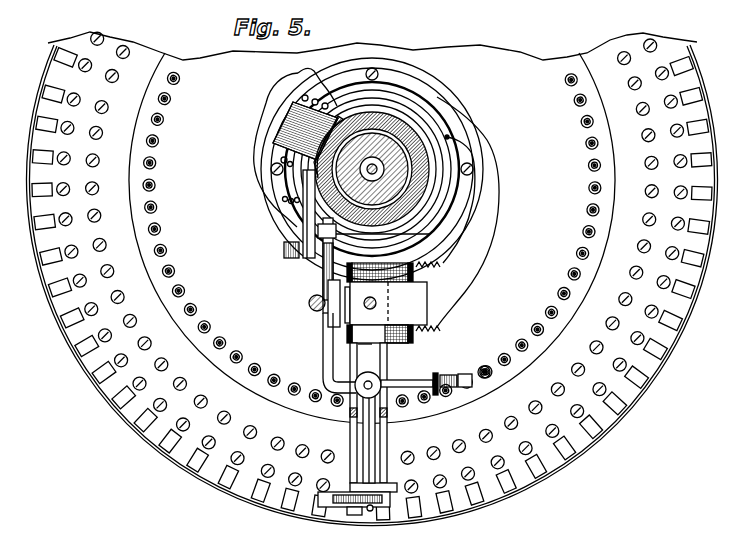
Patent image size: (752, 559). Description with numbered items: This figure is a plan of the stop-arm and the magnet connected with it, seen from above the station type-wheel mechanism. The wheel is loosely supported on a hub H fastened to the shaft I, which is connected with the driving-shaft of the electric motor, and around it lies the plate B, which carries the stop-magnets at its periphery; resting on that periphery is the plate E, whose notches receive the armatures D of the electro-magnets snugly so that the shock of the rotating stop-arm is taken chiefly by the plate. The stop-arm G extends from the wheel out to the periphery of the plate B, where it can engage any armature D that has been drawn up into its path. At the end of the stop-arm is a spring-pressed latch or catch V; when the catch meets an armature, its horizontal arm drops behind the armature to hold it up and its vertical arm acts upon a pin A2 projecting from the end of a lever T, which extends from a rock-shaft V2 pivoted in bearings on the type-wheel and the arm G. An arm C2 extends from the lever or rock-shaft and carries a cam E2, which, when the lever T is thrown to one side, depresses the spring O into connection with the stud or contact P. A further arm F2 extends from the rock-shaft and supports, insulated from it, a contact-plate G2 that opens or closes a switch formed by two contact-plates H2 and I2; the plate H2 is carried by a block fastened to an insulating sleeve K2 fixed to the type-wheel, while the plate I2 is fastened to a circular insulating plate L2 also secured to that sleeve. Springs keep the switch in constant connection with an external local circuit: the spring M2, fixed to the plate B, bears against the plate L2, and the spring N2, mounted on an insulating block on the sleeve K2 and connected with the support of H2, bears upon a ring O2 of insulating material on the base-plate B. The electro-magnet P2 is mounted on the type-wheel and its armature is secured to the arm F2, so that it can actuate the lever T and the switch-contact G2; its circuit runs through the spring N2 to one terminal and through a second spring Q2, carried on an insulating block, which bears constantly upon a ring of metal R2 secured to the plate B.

The plate E is at (496, 517).
The plate B is at (372, 238).
The ring O2 is at (425, 110).
The circular plate L2 is at (417, 213).
The ring of metal R2 is at (448, 113).
The spring M2 is at (400, 123).
The hub H is at (379, 182).
The shaft I is at (369, 188).
The sleeve K2 is at (398, 211).
The spring Q2 is at (283, 158).
The spring N2 is at (294, 177).
The contact-plate G2 is at (324, 210).
The contact-plate H2 is at (315, 231).
The contact-plate I2 is at (333, 233).
The electro-magnet P2 is at (392, 283).
The stop-arm G is at (347, 436).
The lever T is at (368, 452).
The arm F2 is at (332, 360).
The rock-shaft V2 is at (368, 379).
The arm C2 is at (402, 385).
The cam E2 is at (443, 380).
The spring O is at (457, 377).
The stud or contact P is at (485, 368).
The latch or catch V is at (330, 507).
The armature D is at (318, 512).
The pin A2 is at (370, 511).